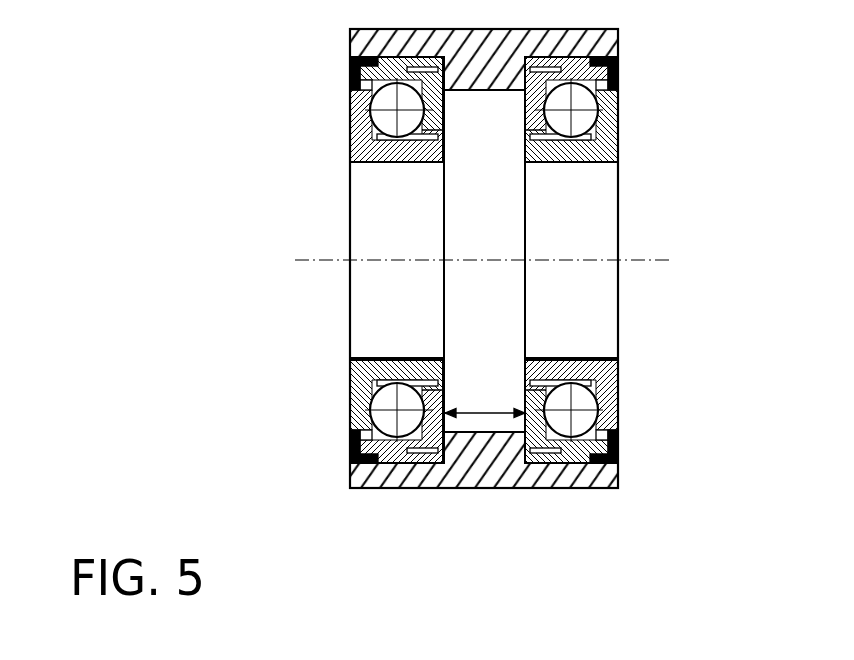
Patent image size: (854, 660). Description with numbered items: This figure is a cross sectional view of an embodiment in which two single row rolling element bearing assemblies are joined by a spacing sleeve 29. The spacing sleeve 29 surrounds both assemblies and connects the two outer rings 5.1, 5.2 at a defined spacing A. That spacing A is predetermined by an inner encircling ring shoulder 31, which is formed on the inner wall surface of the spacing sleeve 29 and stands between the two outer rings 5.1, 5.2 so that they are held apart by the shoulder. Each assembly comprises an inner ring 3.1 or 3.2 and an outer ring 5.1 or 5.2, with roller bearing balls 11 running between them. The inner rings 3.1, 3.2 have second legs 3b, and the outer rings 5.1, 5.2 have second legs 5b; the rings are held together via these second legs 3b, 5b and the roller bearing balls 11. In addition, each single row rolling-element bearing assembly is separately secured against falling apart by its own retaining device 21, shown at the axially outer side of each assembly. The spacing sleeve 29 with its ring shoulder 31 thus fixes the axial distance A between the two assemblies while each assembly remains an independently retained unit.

The spacing sleeve 29 is at (473, 45).
The inner encircling ring shoulder 31 is at (491, 74).
The spacing A is at (485, 390).
The outer ring 5.1 is at (349, 31).
The outer ring 5.2 is at (619, 30).
The inner ring 3.1 is at (353, 128).
The inner ring 3.2 is at (617, 150).
The second leg 5b is at (410, 462).
The second leg 3b is at (350, 380).
The roller bearing ball 11 is at (350, 437).
The retaining device 21 is at (350, 460).